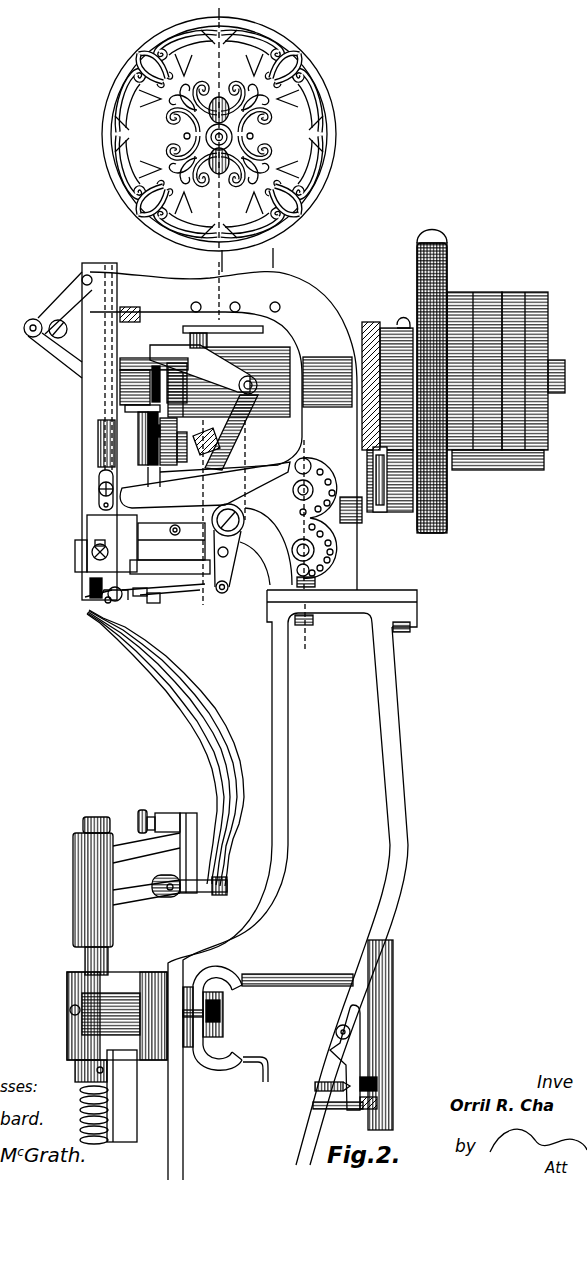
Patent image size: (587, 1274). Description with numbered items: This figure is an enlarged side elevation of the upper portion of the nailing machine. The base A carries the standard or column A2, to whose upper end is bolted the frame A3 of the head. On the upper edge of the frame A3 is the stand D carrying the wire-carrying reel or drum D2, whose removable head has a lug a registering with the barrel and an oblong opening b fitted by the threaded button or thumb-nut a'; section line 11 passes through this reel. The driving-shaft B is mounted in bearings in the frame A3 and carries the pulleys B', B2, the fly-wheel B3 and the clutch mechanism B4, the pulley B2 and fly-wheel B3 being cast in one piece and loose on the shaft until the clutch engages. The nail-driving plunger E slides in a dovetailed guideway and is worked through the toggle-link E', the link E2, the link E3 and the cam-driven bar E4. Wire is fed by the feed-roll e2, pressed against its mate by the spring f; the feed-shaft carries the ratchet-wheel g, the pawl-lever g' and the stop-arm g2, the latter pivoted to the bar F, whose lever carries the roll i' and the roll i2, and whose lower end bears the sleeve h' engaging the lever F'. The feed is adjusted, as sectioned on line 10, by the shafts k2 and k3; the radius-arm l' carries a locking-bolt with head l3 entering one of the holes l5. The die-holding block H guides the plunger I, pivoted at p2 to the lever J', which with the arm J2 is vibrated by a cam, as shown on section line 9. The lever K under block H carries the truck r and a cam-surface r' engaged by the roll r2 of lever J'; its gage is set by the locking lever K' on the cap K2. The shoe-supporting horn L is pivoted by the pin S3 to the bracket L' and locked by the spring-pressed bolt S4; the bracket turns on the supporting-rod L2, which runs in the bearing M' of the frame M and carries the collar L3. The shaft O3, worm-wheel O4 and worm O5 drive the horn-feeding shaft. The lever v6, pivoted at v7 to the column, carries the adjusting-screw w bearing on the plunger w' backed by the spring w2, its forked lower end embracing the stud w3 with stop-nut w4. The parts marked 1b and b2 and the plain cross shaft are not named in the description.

The wire-carrying reel or drum D2 is at (334, 105).
The section line 11 is at (218, 10).
The oblong opening b is at (231, 133).
The lug a is at (221, 135).
The stand D is at (187, 140).
The section line 9 is at (204, 436).
The frame of the head A3 is at (230, 294).
The standard or column A2 is at (316, 758).
The bolt 1b is at (302, 631).
The section line 10 is at (318, 456).
The base A is at (268, 1042).
The button or thumb-nut a' is at (220, 381).
The arm J2 is at (250, 442).
The driving-shaft B is at (154, 373).
The pulley B' is at (362, 381).
The pulley B2 is at (473, 334).
The fly-wheel B3 is at (448, 258).
The clutch mechanism B4 is at (390, 415).
The worm O5 is at (371, 377).
The worm-wheel O4 is at (386, 546).
The shaft through frame shaft is at (327, 382).
The link E3 is at (90, 431).
The link E2 is at (66, 285).
The toggle-link E' is at (55, 355).
The plunger E is at (59, 323).
The bar E4 is at (191, 327).
The stud b2 is at (225, 339).
The feed-roll e2 is at (98, 442).
The spring f is at (99, 484).
The die-holding block H is at (106, 543).
The stud w3 is at (100, 540).
The plunger I is at (170, 548).
The lever F' is at (192, 551).
The sleeve h' is at (166, 532).
The rod or bar F is at (205, 485).
The ratchet-wheel g is at (142, 453).
The two-armed lever g' is at (166, 459).
The stop-arm g2 is at (186, 455).
The anti-friction roll i2 is at (174, 434).
The pivot p2 is at (229, 552).
The lever J' is at (252, 503).
The cam-surface r' is at (232, 584).
The anti-friction roll r2 is at (166, 601).
The roll or truck r is at (96, 596).
The anti-friction roll i' is at (87, 588).
The lever K is at (163, 597).
The adjusting and locking lever K' is at (114, 603).
The cap K2 is at (153, 603).
The radius-arm l' is at (315, 522).
The holes l5 is at (323, 470).
The operating button or head l3 is at (303, 517).
The short horizontal shaft k2 is at (298, 511).
The short horizontal shaft k3 is at (301, 545).
The shoe-supporting horn L is at (158, 778).
The bracket L' is at (155, 859).
The locking-bolt S4 is at (145, 813).
The pin S3 is at (227, 886).
The supporting-rod L2 is at (108, 960).
The bearing M' is at (104, 1016).
The bar or frame M is at (122, 1096).
The collar L3 is at (75, 1068).
The shaft O3 is at (392, 1035).
The pivot v7 is at (337, 1030).
The lever v6 is at (345, 1057).
The plunger w' is at (332, 1079).
The adjusting-screw w is at (368, 1077).
The spiral spring w2 is at (338, 1113).
The adjustable stop-nut w4 is at (366, 1114).